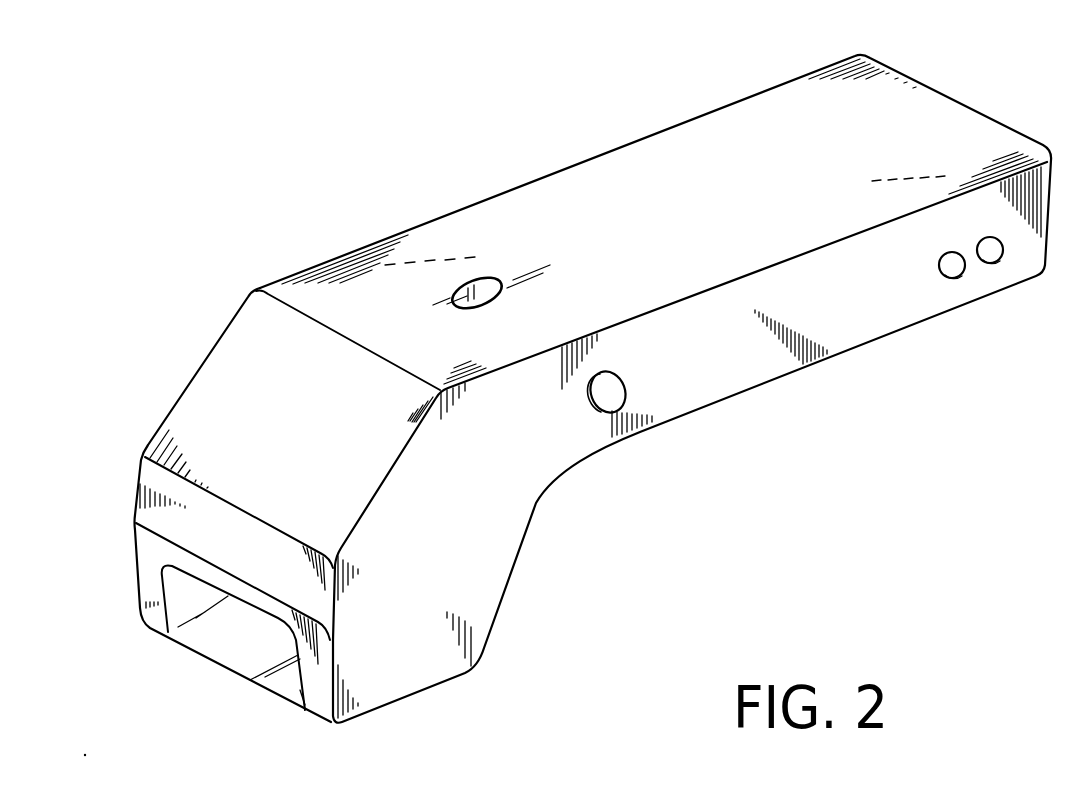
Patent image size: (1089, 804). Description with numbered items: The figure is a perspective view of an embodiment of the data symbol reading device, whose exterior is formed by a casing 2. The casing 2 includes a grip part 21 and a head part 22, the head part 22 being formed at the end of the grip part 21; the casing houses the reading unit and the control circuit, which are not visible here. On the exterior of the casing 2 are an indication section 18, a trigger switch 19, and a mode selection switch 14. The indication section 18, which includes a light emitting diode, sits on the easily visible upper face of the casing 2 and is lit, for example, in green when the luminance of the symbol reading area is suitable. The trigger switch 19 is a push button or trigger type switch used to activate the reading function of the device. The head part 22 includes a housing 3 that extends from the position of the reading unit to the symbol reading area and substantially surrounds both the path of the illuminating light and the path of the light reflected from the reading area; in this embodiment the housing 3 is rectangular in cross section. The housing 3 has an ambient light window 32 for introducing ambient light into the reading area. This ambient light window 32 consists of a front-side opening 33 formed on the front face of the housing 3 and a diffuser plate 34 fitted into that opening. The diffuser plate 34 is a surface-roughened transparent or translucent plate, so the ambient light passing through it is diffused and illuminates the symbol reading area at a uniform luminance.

The casing 2 is at (647, 171).
The housing 3 is at (478, 583).
The mode selection switch 14 is at (957, 265).
The indication section 18 is at (487, 288).
The trigger switch 19 is at (627, 392).
The grip part 21 is at (904, 118).
The head part 22 is at (213, 412).
The ambient light window 32 is at (228, 644).
The front-side opening 33 is at (160, 589).
The diffuser plate 34 is at (287, 680).